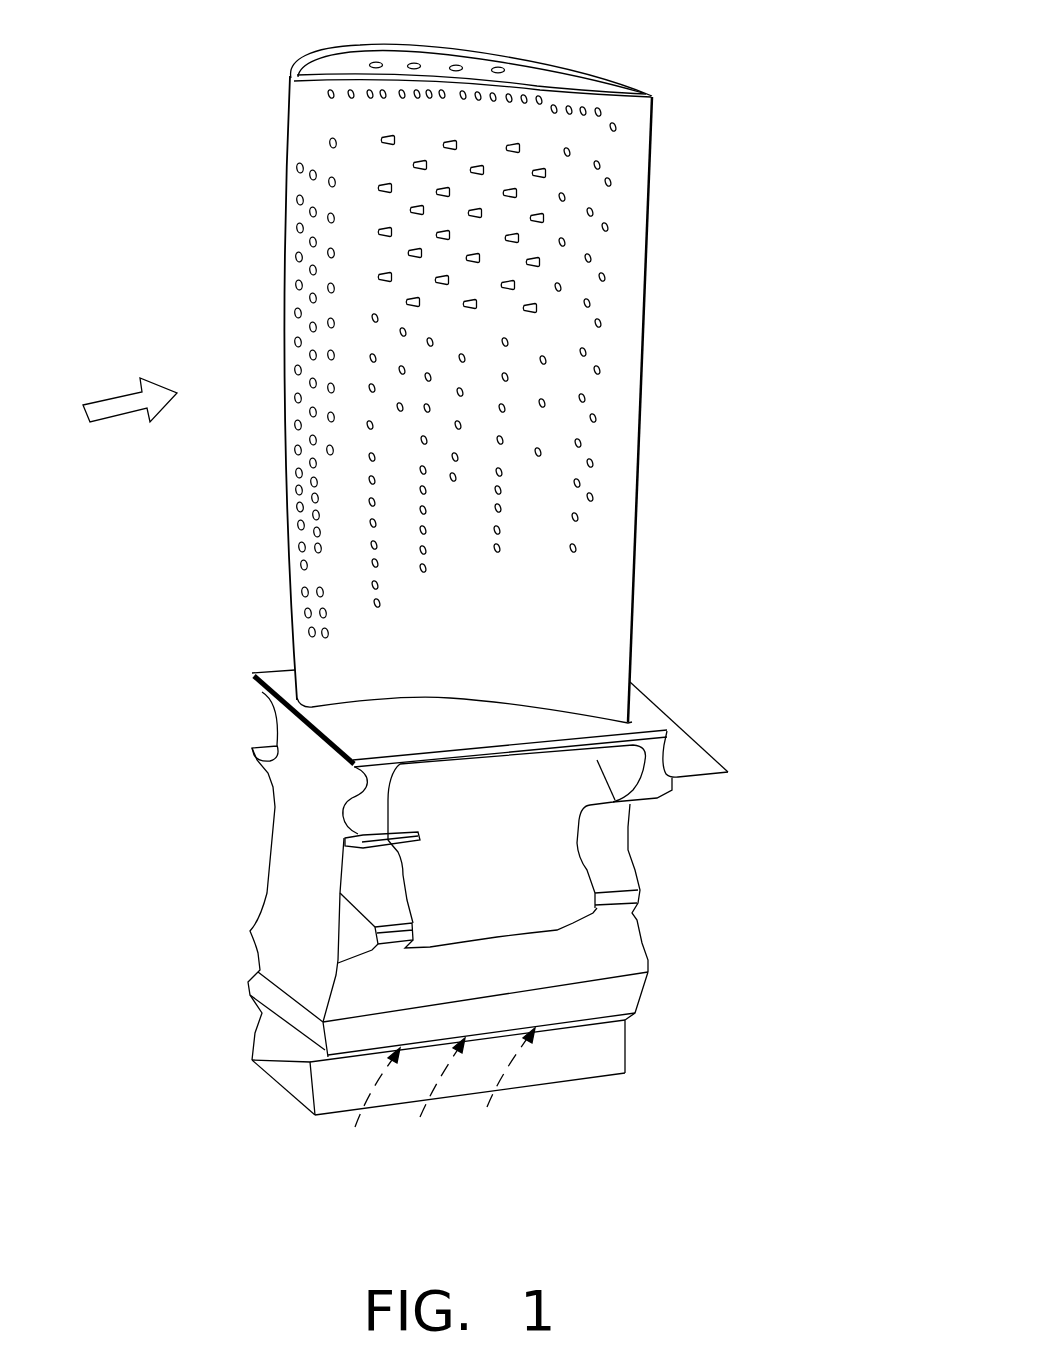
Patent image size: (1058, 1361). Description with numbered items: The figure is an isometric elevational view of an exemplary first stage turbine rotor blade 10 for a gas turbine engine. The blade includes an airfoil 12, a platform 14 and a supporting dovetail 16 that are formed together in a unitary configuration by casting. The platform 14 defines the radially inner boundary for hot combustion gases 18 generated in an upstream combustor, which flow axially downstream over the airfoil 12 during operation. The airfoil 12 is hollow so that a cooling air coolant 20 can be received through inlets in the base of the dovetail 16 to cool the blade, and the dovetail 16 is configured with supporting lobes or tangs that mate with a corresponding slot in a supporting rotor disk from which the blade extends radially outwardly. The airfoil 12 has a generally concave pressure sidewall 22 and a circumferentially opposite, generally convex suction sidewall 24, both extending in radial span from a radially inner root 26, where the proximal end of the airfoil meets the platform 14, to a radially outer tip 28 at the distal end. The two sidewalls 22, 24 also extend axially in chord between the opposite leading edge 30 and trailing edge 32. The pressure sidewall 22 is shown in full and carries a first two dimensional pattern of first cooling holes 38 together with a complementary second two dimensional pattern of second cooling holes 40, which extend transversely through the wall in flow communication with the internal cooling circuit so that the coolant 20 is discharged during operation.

The turbine rotor blade 10 is at (795, 130).
The airfoil 12 is at (282, 100).
The platform 14 is at (252, 677).
The dovetail 16 is at (250, 932).
The combustion gases 18 is at (110, 397).
The cooling air coolant 20 is at (330, 1132).
The pressure sidewall 22 is at (490, 575).
The suction sidewall 24 is at (535, 58).
The root 26 is at (450, 697).
The tip 28 is at (372, 48).
The leading edge 30 is at (292, 604).
The trailing edge 32 is at (641, 447).
The first cooling holes 38 is at (508, 405).
The second cooling holes 40 is at (362, 178).